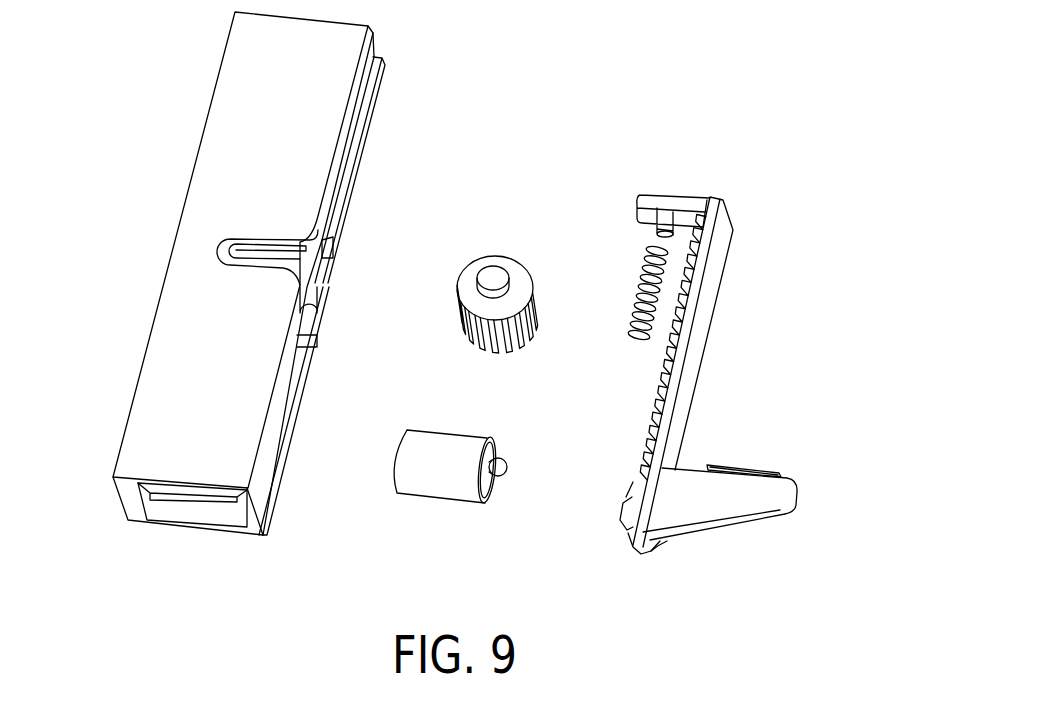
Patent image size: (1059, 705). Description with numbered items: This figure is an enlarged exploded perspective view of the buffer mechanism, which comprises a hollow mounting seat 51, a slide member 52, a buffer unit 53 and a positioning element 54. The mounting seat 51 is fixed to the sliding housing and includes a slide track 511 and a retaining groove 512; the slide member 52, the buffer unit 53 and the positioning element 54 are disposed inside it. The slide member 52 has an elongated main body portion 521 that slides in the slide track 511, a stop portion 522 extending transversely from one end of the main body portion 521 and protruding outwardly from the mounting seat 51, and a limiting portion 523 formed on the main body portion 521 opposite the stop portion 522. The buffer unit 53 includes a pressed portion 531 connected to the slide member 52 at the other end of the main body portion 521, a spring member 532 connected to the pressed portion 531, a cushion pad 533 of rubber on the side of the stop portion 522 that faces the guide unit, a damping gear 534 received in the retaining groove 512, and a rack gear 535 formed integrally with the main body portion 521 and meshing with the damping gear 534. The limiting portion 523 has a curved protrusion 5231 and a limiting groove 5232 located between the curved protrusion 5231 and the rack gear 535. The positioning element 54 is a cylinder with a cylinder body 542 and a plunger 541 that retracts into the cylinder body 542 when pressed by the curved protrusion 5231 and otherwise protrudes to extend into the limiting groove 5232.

The mounting seat 51 is at (247, 87).
The slide track 511 is at (313, 257).
The retaining groove 512 is at (228, 253).
The slide member 52 is at (669, 395).
The main body portion 521 is at (705, 312).
The stop portion 522 is at (707, 507).
The limiting portion 523 is at (577, 560).
The curved protrusion 5231 is at (627, 510).
The limiting groove 5232 is at (633, 482).
The buffer unit 53 is at (624, 216).
The pressed portion 531 is at (663, 202).
The spring member 532 is at (637, 282).
The cushion pad 533 is at (750, 467).
The damping gear 534 is at (492, 278).
The rack gear 535 is at (653, 383).
The positioning element 54 is at (451, 473).
The plunger 541 is at (498, 475).
The cylinder body 542 is at (448, 445).